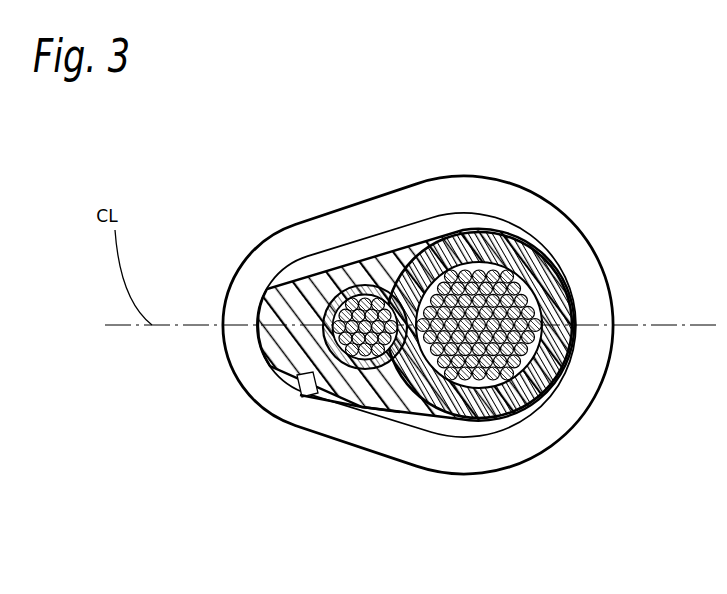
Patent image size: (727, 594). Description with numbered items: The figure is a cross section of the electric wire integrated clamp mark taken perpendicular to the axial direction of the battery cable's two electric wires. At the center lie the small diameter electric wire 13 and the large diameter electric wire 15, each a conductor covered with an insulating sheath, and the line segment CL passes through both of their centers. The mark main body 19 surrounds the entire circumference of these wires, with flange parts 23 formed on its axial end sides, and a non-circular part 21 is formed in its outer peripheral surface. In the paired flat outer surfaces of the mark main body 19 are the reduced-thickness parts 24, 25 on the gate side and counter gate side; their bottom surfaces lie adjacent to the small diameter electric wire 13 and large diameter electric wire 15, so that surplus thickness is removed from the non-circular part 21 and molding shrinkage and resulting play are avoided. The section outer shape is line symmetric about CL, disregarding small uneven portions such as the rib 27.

The small diameter electric wire 13 is at (352, 272).
The large diameter electric wire 15 is at (526, 266).
The mark main body 19 is at (573, 278).
The non-circular part 21 is at (568, 364).
The flange part 23 is at (580, 408).
The reduced-thickness part 24 is at (411, 262).
The reduced-thickness part 25 is at (296, 392).
The rib 27 is at (338, 408).